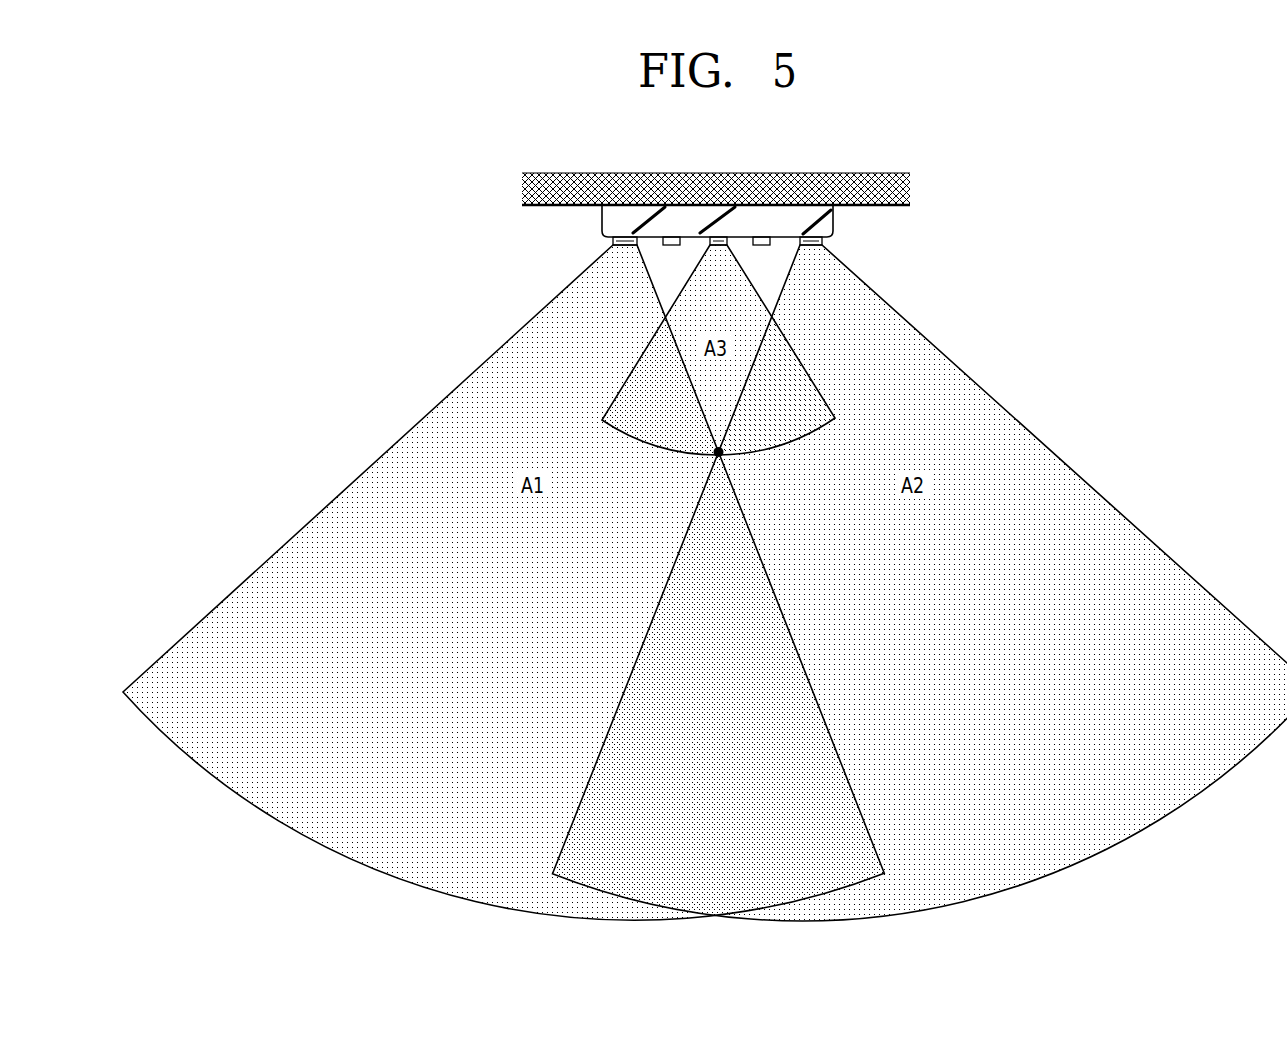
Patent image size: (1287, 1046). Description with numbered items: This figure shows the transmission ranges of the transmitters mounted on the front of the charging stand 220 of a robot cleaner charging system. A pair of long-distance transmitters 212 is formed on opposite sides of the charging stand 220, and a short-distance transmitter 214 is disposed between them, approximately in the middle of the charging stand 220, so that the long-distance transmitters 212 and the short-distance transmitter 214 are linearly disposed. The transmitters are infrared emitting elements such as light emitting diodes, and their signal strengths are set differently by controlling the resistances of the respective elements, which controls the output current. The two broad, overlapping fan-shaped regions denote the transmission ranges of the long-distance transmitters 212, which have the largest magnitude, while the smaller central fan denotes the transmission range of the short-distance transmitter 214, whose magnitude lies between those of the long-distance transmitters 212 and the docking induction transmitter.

The charging stand 220 is at (618, 213).
The short-distance transmitter 214 is at (716, 239).
The long-distance transmitter 212 is at (614, 250).